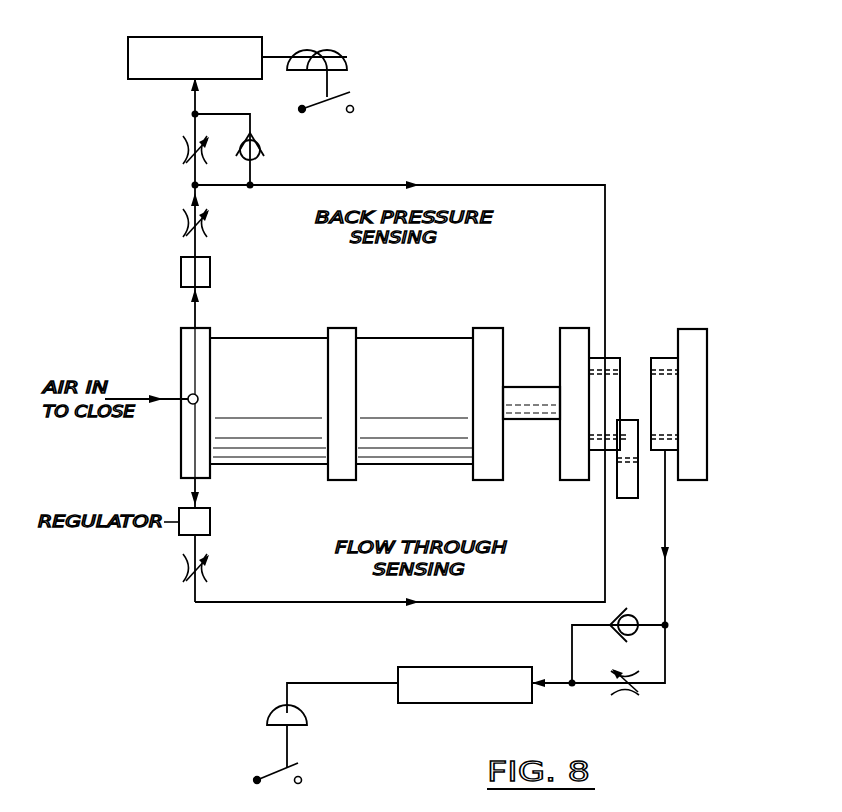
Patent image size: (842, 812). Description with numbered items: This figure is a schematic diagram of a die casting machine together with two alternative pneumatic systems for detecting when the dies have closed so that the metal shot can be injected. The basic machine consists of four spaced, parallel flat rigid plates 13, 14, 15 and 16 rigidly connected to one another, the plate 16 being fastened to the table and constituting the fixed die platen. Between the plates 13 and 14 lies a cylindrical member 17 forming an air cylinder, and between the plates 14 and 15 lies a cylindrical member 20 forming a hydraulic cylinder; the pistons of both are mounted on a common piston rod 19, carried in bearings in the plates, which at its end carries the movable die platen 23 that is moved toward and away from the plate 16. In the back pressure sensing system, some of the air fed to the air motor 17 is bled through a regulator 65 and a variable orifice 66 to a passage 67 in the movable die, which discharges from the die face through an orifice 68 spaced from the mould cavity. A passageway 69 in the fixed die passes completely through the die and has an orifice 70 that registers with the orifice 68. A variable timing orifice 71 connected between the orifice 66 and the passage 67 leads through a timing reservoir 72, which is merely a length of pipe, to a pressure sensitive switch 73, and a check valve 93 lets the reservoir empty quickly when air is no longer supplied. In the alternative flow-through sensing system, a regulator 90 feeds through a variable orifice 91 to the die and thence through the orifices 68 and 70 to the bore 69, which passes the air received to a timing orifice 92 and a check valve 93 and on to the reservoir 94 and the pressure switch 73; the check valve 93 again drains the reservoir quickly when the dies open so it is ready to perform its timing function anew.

The plate 13 is at (183, 449).
The plate 14 is at (341, 327).
The plate 15 is at (485, 327).
The plate 16 is at (692, 328).
The cylindrical member 17 is at (284, 410).
The piston rod 19 is at (533, 414).
The cylindrical member 20 is at (430, 412).
The movable die platen 23 is at (583, 380).
The regulator 65 is at (180, 272).
The variable orifice 66 is at (183, 223).
The passage 67 is at (592, 358).
The orifice 68 is at (612, 368).
The passageway 69 is at (656, 370).
The orifice 70 is at (652, 372).
The variable timing orifice 71 is at (183, 150).
The timing reservoir 72 is at (160, 37).
The pressure sensitive switch 73 is at (327, 60).
The regulator 90 is at (210, 526).
The variable orifice 91 is at (183, 569).
The timing orifice 92 is at (627, 697).
The check valve 93 is at (262, 151).
The reservoir 94 is at (463, 667).